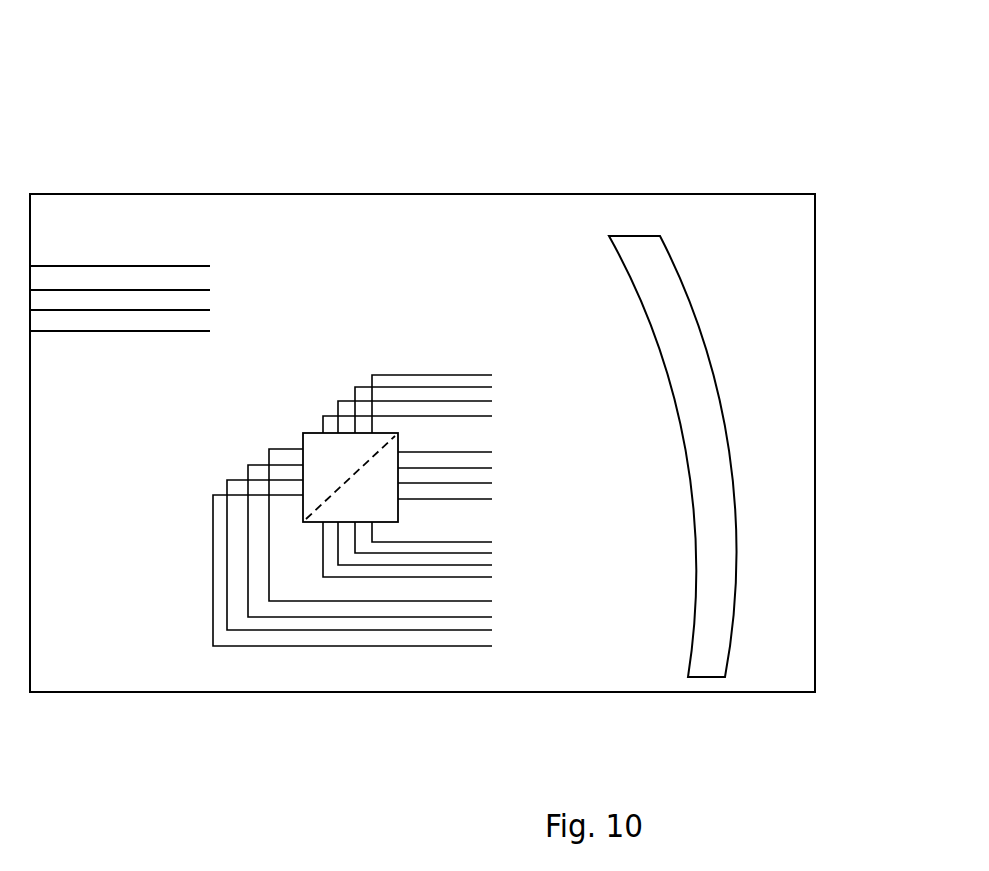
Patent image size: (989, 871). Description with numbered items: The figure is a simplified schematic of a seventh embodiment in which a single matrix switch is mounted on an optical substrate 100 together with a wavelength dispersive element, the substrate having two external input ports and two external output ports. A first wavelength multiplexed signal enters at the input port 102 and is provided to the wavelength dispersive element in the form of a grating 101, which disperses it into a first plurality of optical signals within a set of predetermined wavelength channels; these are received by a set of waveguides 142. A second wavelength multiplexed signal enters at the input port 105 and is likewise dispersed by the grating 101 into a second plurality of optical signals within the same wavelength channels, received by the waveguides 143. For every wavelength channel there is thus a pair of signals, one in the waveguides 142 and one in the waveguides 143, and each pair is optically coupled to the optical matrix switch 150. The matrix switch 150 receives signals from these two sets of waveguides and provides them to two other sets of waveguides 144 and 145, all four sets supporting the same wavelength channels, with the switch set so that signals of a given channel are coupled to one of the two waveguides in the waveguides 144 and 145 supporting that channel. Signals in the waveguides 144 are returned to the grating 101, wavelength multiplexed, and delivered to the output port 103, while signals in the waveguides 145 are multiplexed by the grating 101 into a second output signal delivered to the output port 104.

The optical substrate 100 is at (758, 228).
The grating 101 is at (690, 317).
The input port 102 is at (30, 265).
The output port 103 is at (30, 310).
The output port 104 is at (30, 331).
The input port 105 is at (30, 288).
The waveguides 142 is at (497, 367).
The waveguides 143 is at (497, 445).
The waveguides 144 is at (497, 537).
The waveguides 145 is at (497, 590).
The optical matrix switch 150 is at (307, 522).